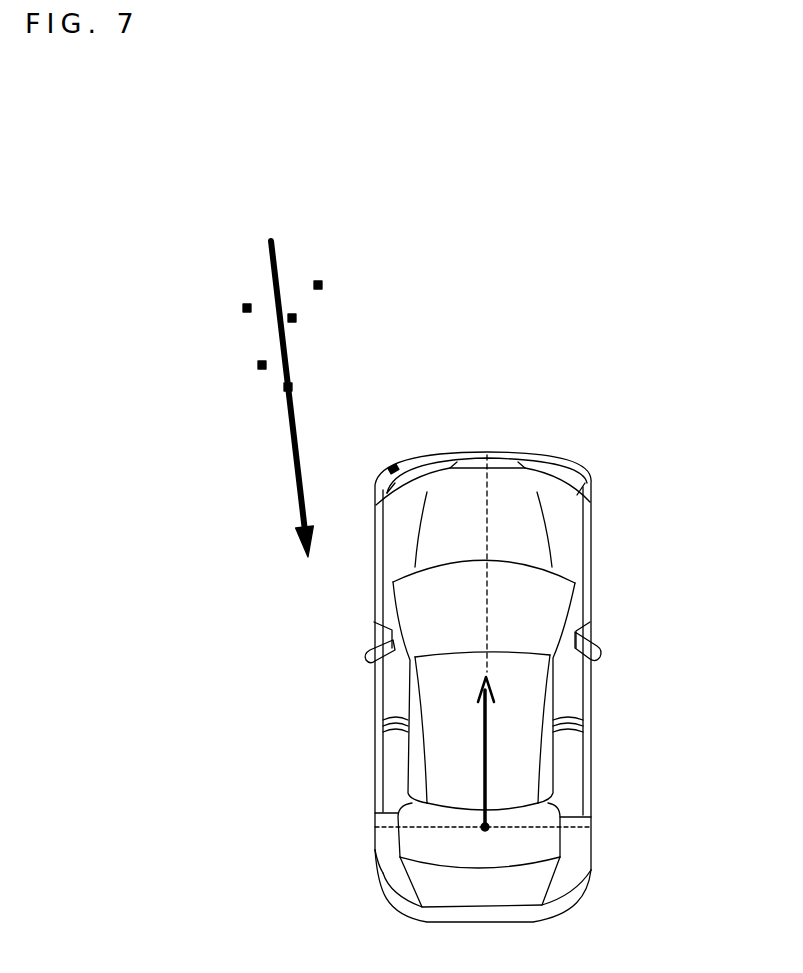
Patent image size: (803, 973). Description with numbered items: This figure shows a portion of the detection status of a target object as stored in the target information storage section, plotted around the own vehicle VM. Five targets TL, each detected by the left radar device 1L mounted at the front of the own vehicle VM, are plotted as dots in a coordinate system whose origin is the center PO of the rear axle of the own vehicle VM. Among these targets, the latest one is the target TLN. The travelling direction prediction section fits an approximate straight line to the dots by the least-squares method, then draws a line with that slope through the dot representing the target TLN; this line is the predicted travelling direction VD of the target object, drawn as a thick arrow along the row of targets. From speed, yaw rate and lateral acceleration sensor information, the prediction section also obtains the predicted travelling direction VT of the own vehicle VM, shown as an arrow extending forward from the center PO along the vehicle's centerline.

The target TL is at (243, 305).
The latest target TLN is at (285, 386).
The left radar device 1L is at (394, 466).
The predicted travelling direction of the target object VD is at (293, 485).
The predicted travelling direction of the own vehicle VT is at (483, 703).
The own vehicle VM is at (592, 722).
The center of the rear axle PO is at (486, 826).